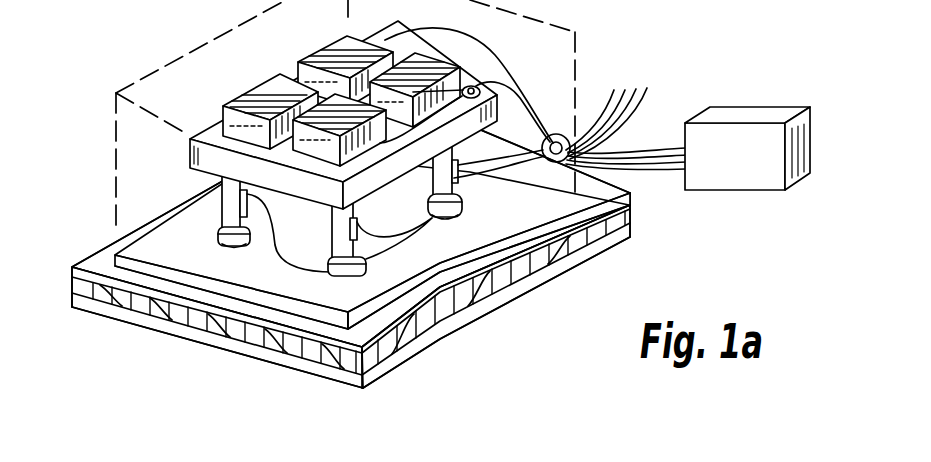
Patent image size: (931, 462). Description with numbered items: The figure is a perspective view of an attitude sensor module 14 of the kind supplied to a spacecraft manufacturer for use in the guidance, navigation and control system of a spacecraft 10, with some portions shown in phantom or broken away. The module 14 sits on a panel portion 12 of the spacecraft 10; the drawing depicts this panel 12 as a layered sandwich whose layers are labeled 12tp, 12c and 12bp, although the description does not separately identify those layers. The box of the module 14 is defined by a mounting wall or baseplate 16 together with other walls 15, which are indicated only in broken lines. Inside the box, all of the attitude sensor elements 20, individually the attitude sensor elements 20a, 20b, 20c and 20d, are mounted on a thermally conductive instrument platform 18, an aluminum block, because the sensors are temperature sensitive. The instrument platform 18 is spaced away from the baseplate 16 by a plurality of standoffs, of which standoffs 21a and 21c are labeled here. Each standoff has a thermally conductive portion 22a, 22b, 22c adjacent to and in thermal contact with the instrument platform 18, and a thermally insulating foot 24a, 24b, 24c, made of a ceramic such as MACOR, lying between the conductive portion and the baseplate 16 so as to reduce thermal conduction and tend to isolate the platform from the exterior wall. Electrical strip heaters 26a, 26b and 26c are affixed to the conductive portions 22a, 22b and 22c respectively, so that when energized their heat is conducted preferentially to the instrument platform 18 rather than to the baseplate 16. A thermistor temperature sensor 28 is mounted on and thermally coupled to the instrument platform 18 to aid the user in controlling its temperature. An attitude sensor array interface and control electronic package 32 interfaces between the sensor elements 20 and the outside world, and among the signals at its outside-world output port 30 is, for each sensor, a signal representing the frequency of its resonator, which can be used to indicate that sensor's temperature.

The spacecraft 10 is at (428, 201).
The panel portion of a spacecraft 12 is at (376, 238).
The top plate of base panel 12tp is at (630, 200).
The honeycomb core of base panel 12c is at (575, 248).
The bottom plate of base panel 12bp is at (516, 294).
The attitude sensor module 14 is at (311, 115).
The other walls 15 is at (163, 76).
The mounting wall or baseplate 16 is at (133, 276).
The instrument platform 18 is at (190, 137).
The attitude sensor elements 20 is at (304, 91).
The attitude sensor element 20a is at (232, 103).
The attitude sensor element 20b is at (322, 51).
The attitude sensor element 20c is at (293, 152).
The attitude sensor element 20d is at (452, 58).
The standoff 21a is at (241, 265).
The standoff 21c is at (446, 222).
The thermally conductive portion 22a is at (193, 203).
The thermally conductive portion 22b is at (337, 246).
The thermally conductive portion 22c is at (476, 146).
The thermally insulating foot 24a is at (218, 244).
The thermally insulating foot 24b is at (354, 277).
The thermally insulating foot 24c is at (438, 216).
The electrical strip heater 26a is at (270, 209).
The electrical strip heater 26b is at (358, 222).
The electrical strip heater 26c is at (459, 168).
The thermistor temperature sensor 28 is at (477, 86).
The outside-world output port 30 is at (556, 134).
The ASA interface and control electronic package 32 is at (778, 108).